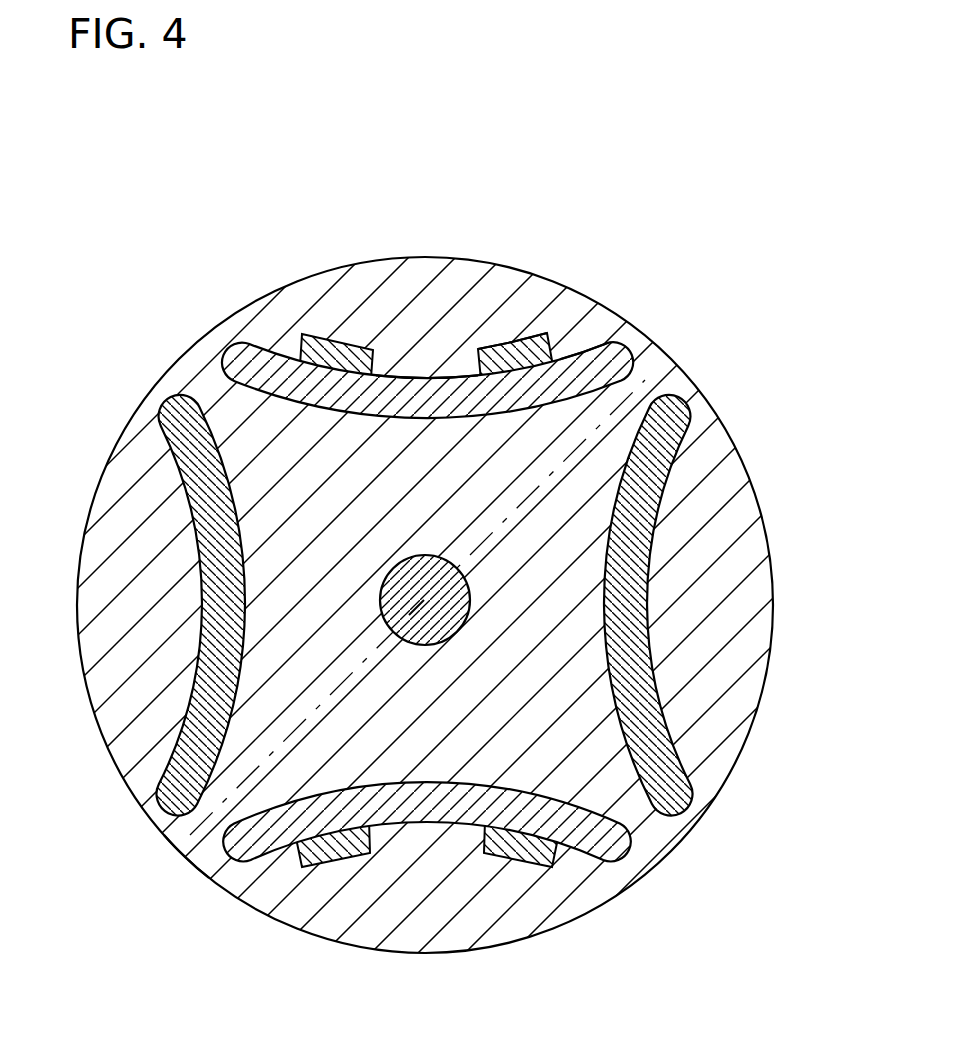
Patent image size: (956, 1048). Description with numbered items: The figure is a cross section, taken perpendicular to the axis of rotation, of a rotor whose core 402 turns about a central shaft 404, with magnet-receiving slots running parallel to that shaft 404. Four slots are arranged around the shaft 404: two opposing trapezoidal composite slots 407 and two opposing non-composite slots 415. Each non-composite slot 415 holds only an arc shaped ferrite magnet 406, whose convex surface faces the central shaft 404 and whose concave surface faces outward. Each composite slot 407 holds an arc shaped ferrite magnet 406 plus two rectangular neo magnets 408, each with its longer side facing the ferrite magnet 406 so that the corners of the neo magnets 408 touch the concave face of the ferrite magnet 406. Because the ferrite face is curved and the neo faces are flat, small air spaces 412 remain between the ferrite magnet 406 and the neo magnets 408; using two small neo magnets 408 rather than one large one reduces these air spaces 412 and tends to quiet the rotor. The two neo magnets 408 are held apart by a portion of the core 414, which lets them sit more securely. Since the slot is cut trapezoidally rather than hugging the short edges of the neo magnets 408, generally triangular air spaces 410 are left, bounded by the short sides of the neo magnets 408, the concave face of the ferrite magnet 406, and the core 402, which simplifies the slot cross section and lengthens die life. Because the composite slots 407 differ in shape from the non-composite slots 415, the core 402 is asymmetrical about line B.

The core 402 is at (533, 912).
The central shaft 404 is at (440, 645).
The arc shaped ferrite magnet 406 is at (600, 350).
The trapezoidal composite slot 407 is at (586, 342).
The rectangular neo magnet 408 is at (517, 352).
The triangular air space 410 is at (292, 347).
The air space 412 is at (247, 380).
The portion of the core 414 is at (416, 368).
The non-composite slot 415 is at (167, 767).
The line B is at (133, 878).